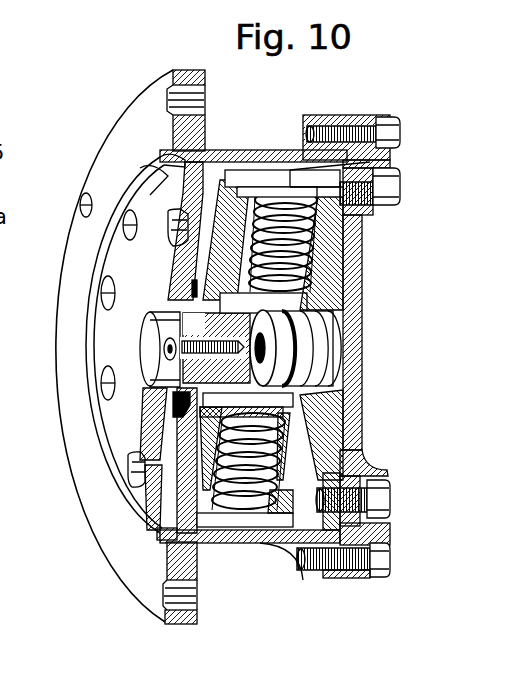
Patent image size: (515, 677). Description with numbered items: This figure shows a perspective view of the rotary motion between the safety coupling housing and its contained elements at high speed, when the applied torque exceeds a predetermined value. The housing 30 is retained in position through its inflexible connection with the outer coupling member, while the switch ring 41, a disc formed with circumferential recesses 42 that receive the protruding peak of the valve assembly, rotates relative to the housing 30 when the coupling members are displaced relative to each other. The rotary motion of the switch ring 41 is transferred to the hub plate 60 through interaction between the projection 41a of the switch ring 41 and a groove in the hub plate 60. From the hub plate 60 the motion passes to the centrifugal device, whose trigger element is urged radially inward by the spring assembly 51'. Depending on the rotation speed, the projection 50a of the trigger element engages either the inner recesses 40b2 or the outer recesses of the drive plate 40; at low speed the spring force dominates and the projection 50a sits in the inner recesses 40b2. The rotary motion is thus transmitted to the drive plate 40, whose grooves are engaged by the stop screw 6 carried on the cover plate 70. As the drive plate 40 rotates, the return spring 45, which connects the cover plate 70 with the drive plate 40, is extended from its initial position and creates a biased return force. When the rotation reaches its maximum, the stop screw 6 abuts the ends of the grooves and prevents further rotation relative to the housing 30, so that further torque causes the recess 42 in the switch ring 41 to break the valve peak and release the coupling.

The housing 30 is at (117, 574).
The switch ring 41 is at (118, 450).
The projection 41a is at (187, 328).
The circumferential recess 42 is at (100, 387).
The hub plate 60 is at (182, 157).
The spring assembly 51' is at (264, 297).
The return spring 45 is at (307, 377).
The cover plate 70 is at (352, 328).
The inner recess 40b2 is at (333, 272).
The drive plate 40 is at (358, 287).
The projection 50a is at (345, 212).
The stop screw 6 is at (362, 452).